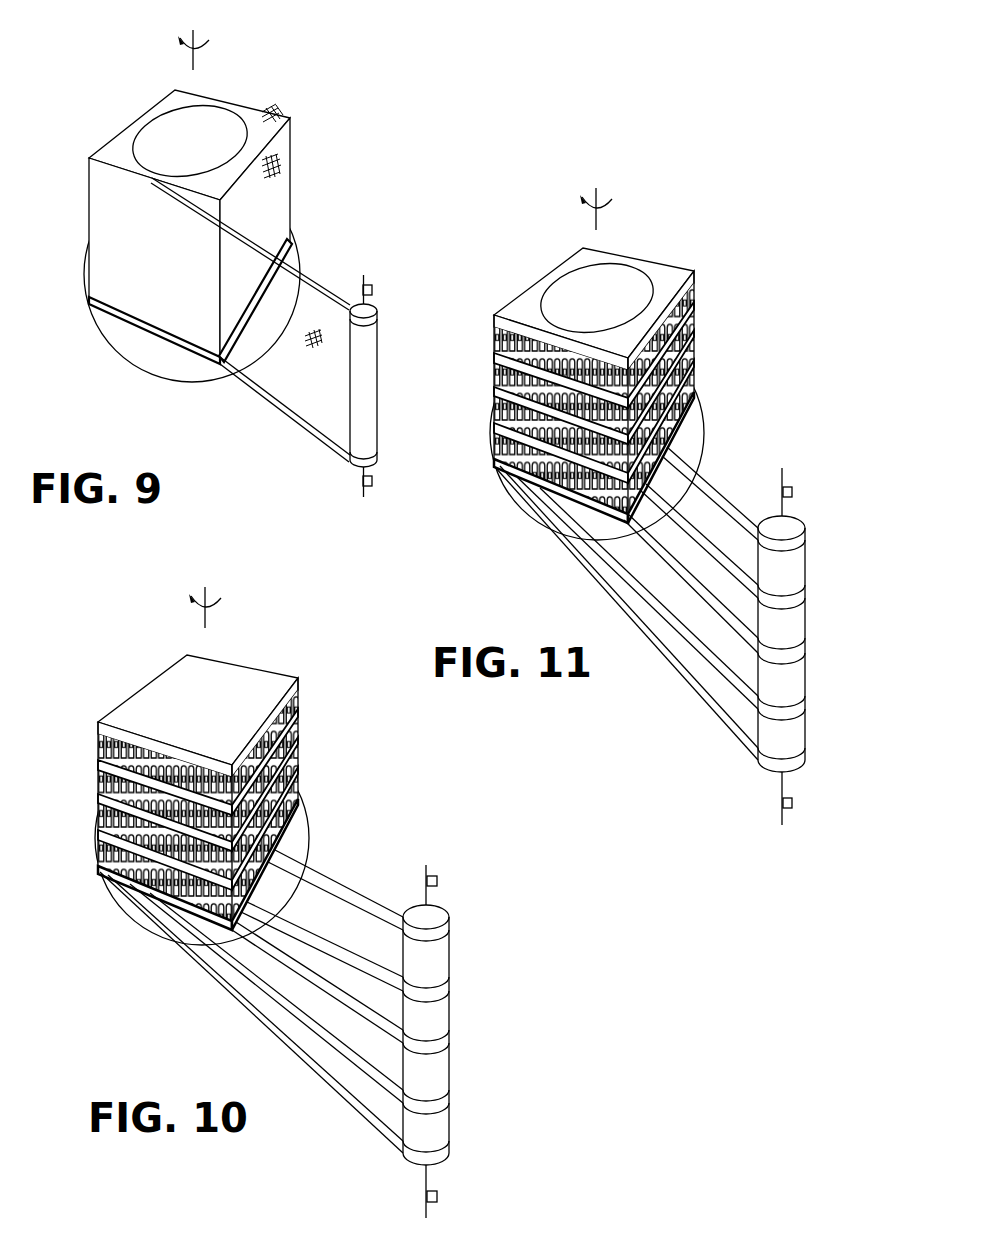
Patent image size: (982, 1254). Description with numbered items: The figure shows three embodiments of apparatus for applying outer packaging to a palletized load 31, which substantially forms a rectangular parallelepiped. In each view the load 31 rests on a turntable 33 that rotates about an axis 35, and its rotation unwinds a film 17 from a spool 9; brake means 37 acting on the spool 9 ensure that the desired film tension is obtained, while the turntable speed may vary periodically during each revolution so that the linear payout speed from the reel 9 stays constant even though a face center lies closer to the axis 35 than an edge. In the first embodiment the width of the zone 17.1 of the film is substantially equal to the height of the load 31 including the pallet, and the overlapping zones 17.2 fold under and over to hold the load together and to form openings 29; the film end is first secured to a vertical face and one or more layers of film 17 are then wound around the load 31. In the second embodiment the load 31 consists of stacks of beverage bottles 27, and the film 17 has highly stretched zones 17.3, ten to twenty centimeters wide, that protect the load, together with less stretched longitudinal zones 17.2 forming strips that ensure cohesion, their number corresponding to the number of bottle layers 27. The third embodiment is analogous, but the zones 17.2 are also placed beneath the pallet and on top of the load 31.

In FIG. 9, the spool 9 is at (392, 341).
In FIG. 10, the spool 9 is at (478, 953).
In FIG. 11, the spool 9 is at (825, 625).
In FIG. 9, the film 17 is at (300, 320).
In FIG. 10, the film 17 is at (329, 985).
In FIG. 11, the film 17 is at (695, 564).
In FIG. 9, the zone of the film 17.1 is at (322, 389).
In FIG. 9, the overlapping zones of the film 17.2 is at (330, 292).
In FIG. 10, the overlapping zones of the film 17.2 is at (437, 981).
In FIG. 11, the overlapping zones of the film 17.2 is at (735, 497).
In FIG. 10, the highly stretched zones 17.3 is at (322, 895).
In FIG. 11, the highly stretched zones 17.3 is at (708, 567).
In FIG. 10, the beverage bottles 27 is at (300, 706).
In FIG. 11, the beverage bottles 27 is at (496, 348).
In FIG. 9, the openings 29 is at (137, 150).
In FIG. 11, the openings 29 is at (540, 307).
In FIG. 9, the palletized load 31 is at (217, 209).
In FIG. 10, the palletized load 31 is at (235, 784).
In FIG. 11, the palletized load 31 is at (609, 376).
In FIG. 9, the turntable 33 is at (83, 325).
In FIG. 11, the turntable 33 is at (505, 508).
In FIG. 9, the axis 35 is at (203, 40).
In FIG. 10, the axis 35 is at (210, 599).
In FIG. 11, the axis 35 is at (606, 200).
In FIG. 9, the brake means 37 is at (374, 290).
In FIG. 10, the brake means 37 is at (438, 881).
In FIG. 11, the brake means 37 is at (793, 492).